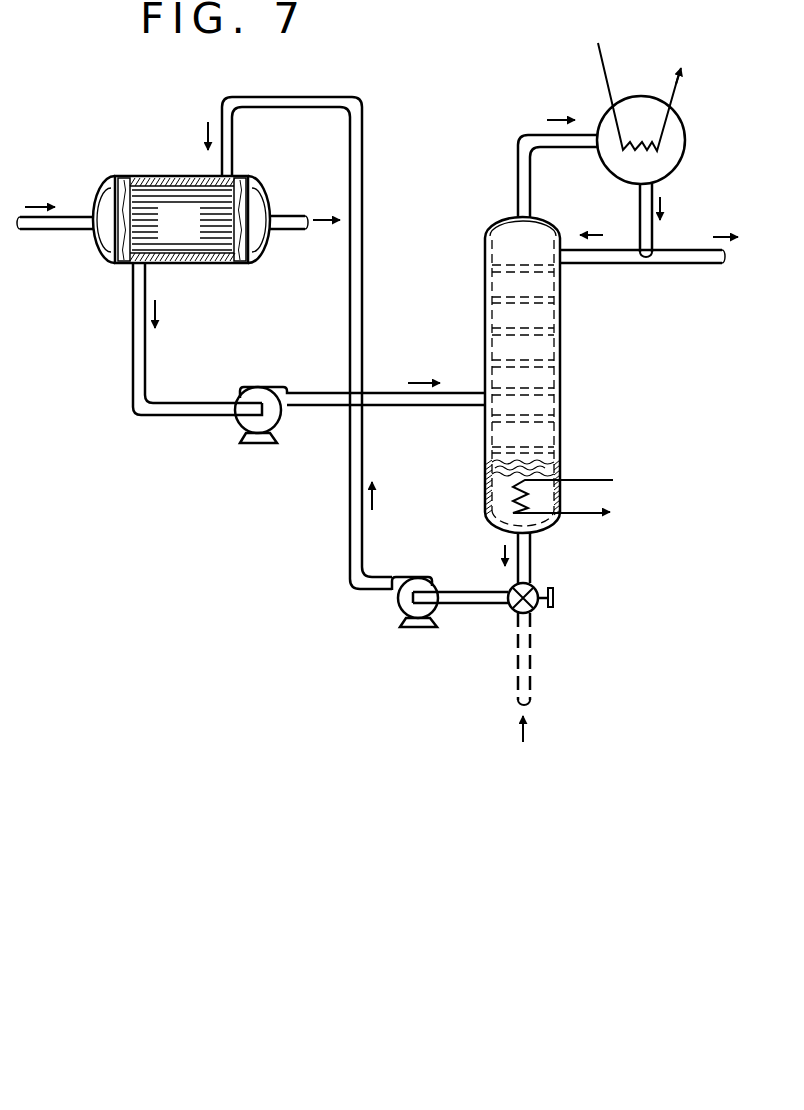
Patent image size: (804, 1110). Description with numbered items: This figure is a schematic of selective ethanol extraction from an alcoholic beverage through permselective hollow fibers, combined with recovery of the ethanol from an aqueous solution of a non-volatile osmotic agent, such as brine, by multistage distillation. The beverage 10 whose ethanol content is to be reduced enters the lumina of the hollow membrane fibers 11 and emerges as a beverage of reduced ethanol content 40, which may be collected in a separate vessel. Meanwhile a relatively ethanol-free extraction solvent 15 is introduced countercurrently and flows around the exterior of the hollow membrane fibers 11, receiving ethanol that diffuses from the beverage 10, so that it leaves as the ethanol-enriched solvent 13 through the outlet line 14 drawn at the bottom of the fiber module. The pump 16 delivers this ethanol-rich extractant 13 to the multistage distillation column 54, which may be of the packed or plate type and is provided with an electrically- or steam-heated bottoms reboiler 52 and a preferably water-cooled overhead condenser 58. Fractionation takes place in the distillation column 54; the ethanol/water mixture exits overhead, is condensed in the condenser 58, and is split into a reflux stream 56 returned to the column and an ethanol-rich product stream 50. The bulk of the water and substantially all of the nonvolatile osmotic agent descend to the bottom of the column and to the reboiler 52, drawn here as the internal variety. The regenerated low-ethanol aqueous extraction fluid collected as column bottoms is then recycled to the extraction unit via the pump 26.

The beverage 10 is at (55, 231).
The hollow membrane fibers 11 is at (192, 235).
The ethanol-enriched solvent 13 is at (170, 248).
The absorbent liquid outlet line 14 is at (133, 341).
The organic extraction solvent 15 is at (233, 148).
The pump 16 is at (262, 391).
The pump 26 is at (424, 581).
The beverage of reduced ethanol content 40 is at (288, 220).
The ethanol-rich product stream 50 is at (708, 264).
The bottoms reboiler 52 is at (506, 482).
The multistage distillation column 54 is at (479, 322).
The reflux stream 56 is at (603, 266).
The overhead condenser 58 is at (689, 152).